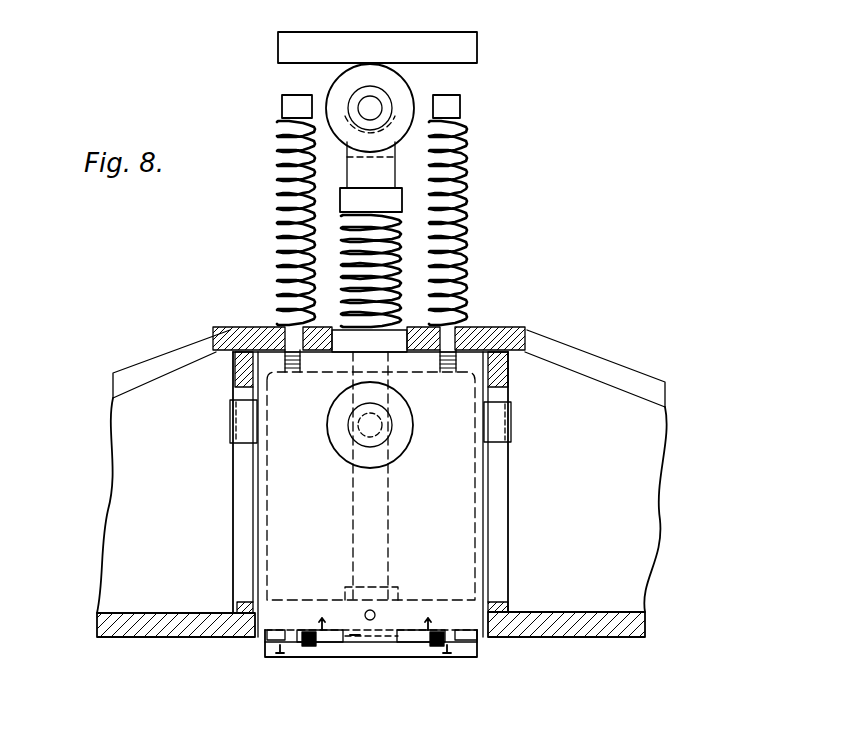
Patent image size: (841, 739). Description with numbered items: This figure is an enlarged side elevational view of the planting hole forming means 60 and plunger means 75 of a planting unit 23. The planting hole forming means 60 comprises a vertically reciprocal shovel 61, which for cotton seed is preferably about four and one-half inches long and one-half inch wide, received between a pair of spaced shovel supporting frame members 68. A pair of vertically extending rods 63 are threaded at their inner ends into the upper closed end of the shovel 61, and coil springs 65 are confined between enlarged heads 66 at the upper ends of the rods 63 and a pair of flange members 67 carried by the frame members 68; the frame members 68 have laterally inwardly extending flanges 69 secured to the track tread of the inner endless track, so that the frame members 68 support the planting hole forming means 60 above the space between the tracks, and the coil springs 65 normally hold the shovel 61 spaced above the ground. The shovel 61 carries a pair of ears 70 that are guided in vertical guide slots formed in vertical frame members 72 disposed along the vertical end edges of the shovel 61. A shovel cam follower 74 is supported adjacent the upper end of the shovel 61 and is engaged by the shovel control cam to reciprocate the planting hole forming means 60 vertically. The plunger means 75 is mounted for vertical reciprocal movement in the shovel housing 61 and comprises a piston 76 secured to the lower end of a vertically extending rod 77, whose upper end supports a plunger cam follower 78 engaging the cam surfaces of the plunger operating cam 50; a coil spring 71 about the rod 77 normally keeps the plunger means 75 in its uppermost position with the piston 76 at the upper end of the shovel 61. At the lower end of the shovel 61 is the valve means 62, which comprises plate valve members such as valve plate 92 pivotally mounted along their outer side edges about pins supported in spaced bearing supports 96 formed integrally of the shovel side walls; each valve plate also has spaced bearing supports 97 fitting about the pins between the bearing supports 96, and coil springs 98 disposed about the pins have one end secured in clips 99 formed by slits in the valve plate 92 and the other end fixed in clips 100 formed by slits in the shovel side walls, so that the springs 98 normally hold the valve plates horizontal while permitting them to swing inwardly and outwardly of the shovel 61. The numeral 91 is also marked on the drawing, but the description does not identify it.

The plunger operating cam 50 is at (470, 50).
The plunger cam follower 78 is at (400, 85).
The rod 77 is at (398, 170).
The plunger means 75 is at (406, 199).
The coil spring 71 is at (393, 265).
The enlarged heads 66 is at (282, 100).
The vertically extending rods 63 is at (371, 223).
The coil springs 65 is at (278, 256).
The flange members 67 is at (146, 367).
The planting unit 23 is at (628, 345).
The shovel supporting frame members 68 is at (130, 461).
The planting hole forming means 60 is at (262, 568).
The vertical frame members 72 is at (247, 528).
The ears 70 is at (232, 428).
The shovel 61 is at (277, 492).
The piston 76 is at (407, 606).
The shovel cam follower 74 is at (330, 414).
The flanges 69 is at (643, 620).
The valve means 62 is at (341, 673).
The plate valve member 92 is at (398, 648).
The bearing supports 96 is at (263, 637).
The bearing supports 97 is at (290, 630).
The coil springs 98 is at (310, 644).
The clips 99 is at (276, 648).
The clips 100 is at (322, 622).
The slot 91 is at (380, 635).